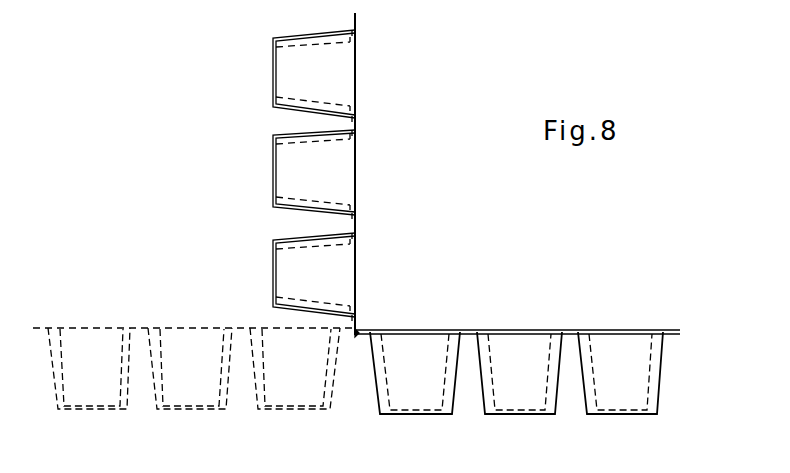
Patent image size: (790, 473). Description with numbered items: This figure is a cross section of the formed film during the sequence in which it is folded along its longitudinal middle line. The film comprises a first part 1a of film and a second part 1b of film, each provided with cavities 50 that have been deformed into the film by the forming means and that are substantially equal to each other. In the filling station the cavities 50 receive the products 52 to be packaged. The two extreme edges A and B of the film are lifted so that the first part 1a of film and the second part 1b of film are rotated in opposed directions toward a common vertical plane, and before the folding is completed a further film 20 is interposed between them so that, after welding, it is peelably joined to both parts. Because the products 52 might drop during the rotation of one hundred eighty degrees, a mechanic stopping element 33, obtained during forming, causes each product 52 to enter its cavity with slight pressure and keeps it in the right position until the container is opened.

The mechanic stopping element 33 is at (360, 35).
The product 52 is at (330, 177).
The cavity 50 is at (58, 355).
The further film 20 is at (485, 330).
The second part of film 1b is at (108, 425).
The first part of film 1a is at (614, 430).
The extreme edge of the film B is at (450, 472).
The extreme edge of the film A is at (477, 465).